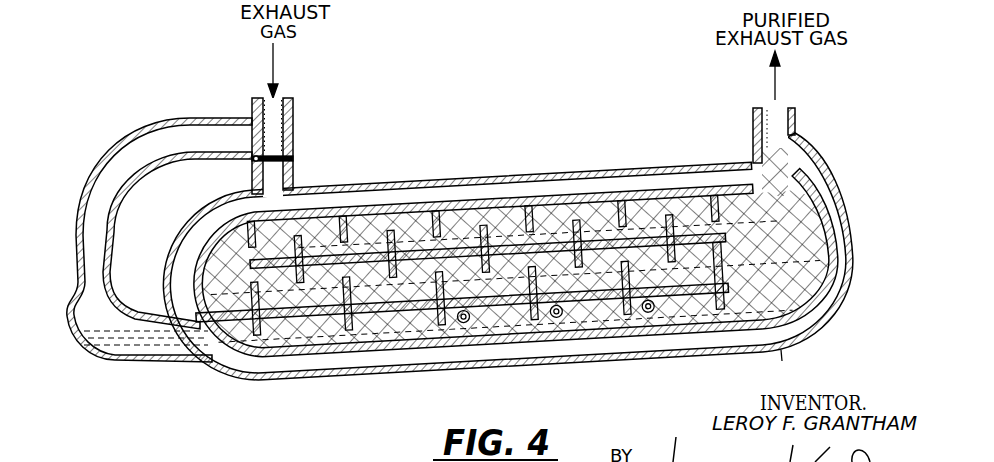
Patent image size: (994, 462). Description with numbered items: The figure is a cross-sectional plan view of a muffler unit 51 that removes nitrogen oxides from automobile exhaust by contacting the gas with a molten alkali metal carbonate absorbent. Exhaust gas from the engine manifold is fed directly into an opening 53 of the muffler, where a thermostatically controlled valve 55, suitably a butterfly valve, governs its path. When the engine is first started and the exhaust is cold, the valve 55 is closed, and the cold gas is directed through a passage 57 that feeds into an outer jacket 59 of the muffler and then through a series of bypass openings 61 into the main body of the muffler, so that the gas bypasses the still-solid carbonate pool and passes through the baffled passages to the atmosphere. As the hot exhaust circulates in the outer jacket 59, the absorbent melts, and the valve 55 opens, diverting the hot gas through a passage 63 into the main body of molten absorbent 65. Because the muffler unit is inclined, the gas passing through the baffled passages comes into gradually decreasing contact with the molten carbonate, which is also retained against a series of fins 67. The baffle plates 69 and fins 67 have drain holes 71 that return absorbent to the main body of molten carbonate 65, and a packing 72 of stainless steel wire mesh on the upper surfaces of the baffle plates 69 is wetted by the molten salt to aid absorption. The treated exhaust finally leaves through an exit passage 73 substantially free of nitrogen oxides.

The muffler unit 51 is at (187, 119).
The opening 53 is at (289, 98).
The thermostatically controlled valve 55 is at (293, 128).
The passage 57 is at (281, 177).
The outer jacket 59 is at (419, 198).
The bypass openings 61 is at (548, 324).
The passage 63 is at (132, 160).
The main body of molten absorbent 65 is at (139, 346).
The fins 67 is at (582, 202).
The baffle plates 69 is at (366, 312).
The drain holes 71 is at (345, 304).
The packing 72 is at (780, 367).
The exit passage 73 is at (781, 125).